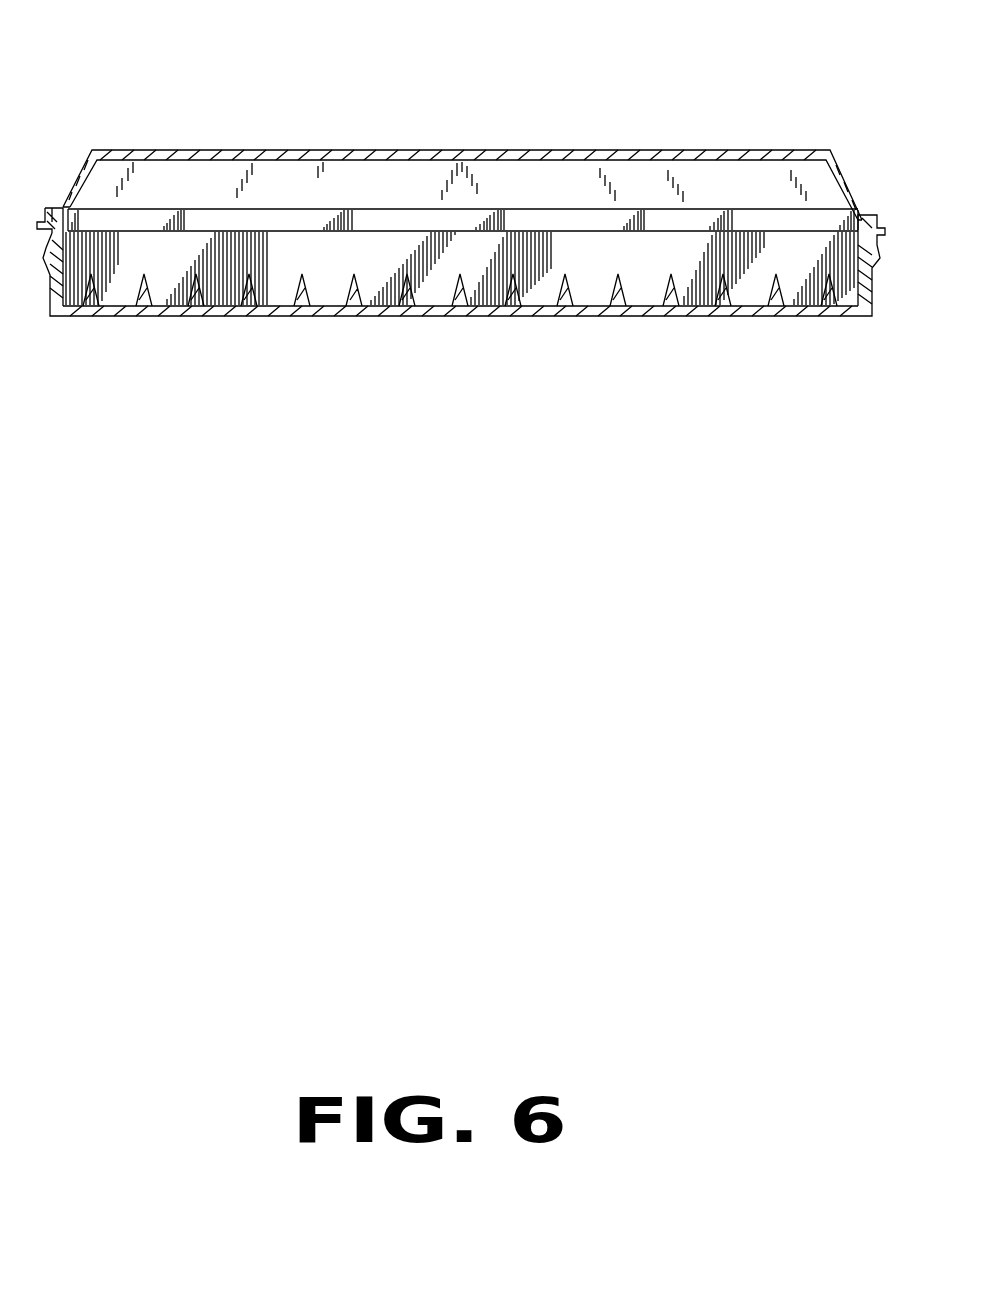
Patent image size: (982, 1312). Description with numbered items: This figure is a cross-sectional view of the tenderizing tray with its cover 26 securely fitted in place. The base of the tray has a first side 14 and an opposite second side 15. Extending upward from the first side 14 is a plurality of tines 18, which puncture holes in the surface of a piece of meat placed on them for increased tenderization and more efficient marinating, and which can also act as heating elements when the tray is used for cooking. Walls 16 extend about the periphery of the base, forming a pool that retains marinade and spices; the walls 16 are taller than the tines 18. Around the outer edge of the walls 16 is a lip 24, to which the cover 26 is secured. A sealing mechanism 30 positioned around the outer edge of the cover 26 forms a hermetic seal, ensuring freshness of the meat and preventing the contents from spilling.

The first side 14 is at (587, 293).
The second side 15 is at (628, 318).
The walls 16 is at (123, 267).
The tines 18 is at (462, 300).
The lip 24 is at (728, 153).
The cover 26 is at (255, 150).
The sealing mechanism 30 is at (63, 207).